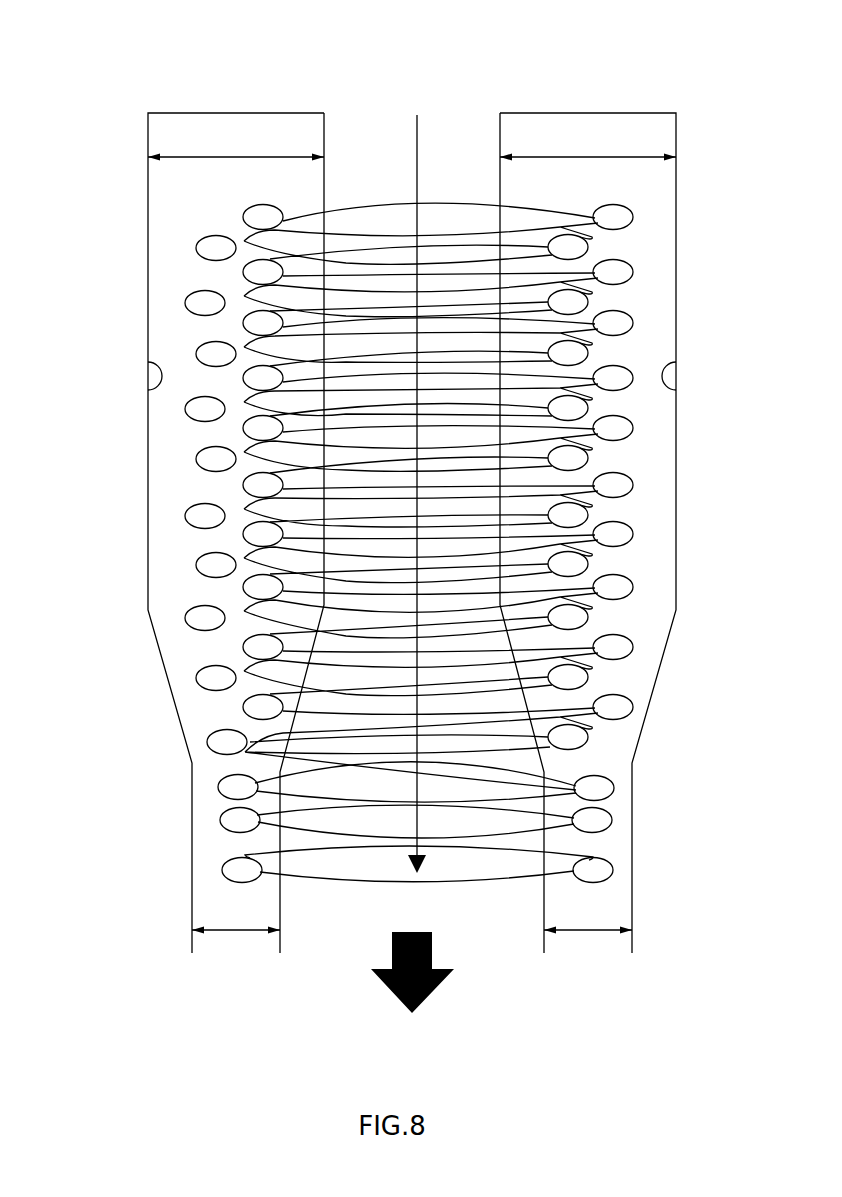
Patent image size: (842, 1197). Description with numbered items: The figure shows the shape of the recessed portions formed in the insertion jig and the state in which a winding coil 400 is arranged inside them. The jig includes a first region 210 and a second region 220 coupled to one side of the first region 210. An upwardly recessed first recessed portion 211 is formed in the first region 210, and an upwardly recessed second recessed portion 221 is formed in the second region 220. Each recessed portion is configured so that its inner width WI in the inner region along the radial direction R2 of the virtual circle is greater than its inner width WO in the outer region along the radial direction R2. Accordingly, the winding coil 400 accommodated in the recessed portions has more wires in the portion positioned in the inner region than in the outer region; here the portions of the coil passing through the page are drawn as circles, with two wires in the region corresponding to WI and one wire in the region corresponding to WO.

The first region 210 is at (679, 86).
The first recessed portion 211 is at (676, 388).
The second region 220 is at (146, 86).
The second recessed portion 221 is at (148, 388).
The winding coil 400 is at (452, 203).
The inner width WI is at (236, 157).
The inner width of outer region WO is at (236, 932).
The radial direction R2 is at (413, 140).